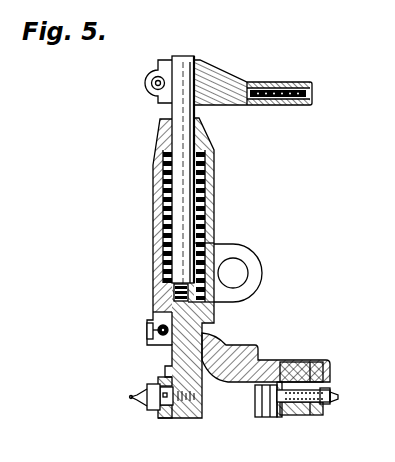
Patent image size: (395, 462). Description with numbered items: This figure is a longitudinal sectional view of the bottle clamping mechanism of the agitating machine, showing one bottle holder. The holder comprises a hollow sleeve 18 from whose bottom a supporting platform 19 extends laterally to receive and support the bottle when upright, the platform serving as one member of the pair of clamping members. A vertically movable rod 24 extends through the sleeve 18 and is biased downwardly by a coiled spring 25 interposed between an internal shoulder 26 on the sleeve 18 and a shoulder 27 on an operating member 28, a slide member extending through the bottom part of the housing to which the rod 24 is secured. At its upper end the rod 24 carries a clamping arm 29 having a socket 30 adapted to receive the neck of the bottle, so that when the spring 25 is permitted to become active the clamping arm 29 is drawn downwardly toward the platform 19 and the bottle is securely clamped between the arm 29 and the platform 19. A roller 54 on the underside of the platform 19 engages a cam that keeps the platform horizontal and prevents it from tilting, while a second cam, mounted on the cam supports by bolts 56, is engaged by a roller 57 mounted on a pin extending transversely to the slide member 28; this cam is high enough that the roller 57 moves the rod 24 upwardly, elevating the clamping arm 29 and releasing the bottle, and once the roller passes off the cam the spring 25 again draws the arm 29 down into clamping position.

The hollow sleeve 18 is at (158, 131).
The supporting platform 19 is at (291, 360).
The vertically movable rod 24 is at (194, 134).
The coiled spring 25 is at (208, 209).
The internal shoulder 26 is at (164, 160).
The shoulder 27 is at (174, 283).
The operating member 28 is at (153, 313).
The clamping arm 29 is at (228, 80).
The socket 30 is at (291, 96).
The roller 54 is at (328, 404).
The bolts 56 is at (161, 381).
The roller 57 is at (157, 412).